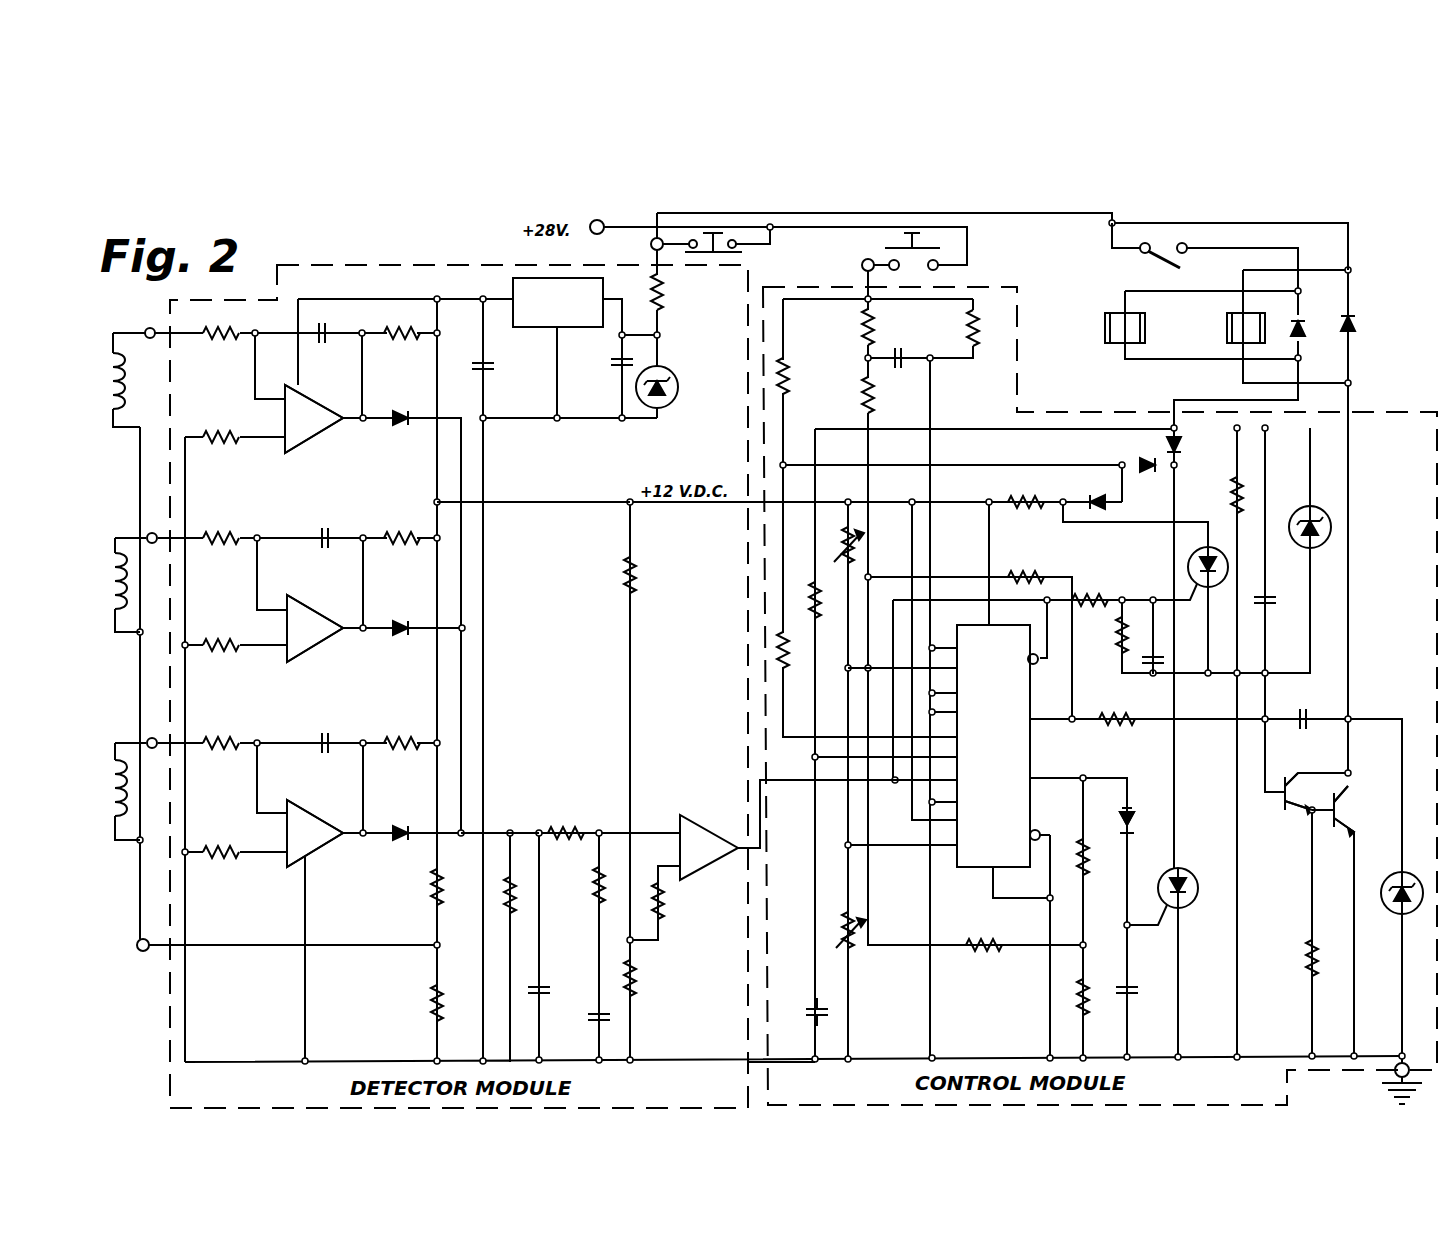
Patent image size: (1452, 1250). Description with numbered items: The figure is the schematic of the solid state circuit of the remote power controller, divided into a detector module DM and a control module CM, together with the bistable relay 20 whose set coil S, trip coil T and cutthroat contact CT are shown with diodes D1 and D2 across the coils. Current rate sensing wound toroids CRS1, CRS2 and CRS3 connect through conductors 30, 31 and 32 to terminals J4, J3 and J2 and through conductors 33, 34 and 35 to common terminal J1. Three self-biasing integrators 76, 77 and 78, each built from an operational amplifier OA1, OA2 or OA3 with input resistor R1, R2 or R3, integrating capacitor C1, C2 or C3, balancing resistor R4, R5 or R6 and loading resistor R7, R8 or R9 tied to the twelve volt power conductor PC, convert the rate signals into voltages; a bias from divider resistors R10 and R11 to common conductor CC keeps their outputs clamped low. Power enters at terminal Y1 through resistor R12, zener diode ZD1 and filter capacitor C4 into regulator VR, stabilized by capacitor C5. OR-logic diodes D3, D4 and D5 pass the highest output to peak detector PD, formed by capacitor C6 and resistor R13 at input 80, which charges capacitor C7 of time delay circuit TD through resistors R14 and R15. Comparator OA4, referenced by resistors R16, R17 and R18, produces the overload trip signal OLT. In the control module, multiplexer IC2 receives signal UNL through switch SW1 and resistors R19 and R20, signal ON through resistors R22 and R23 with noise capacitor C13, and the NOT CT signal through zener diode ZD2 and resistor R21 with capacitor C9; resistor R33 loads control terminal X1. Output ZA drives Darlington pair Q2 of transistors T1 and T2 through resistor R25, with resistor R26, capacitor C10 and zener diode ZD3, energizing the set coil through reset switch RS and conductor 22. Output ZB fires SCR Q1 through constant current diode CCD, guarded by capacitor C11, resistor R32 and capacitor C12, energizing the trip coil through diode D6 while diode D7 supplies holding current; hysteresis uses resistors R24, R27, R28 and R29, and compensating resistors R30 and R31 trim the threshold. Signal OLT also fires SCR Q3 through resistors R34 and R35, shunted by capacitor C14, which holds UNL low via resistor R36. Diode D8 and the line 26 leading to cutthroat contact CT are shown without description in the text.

The relay 20 is at (1185, 324).
The conductor 22 is at (1350, 240).
The control switch line 26 is at (1110, 245).
The conductor 30 is at (113, 333).
The conductor 31 is at (115, 538).
The conductor 32 is at (115, 743).
The conductor 33 is at (125, 426).
The conductor 34 is at (128, 630).
The conductor 35 is at (132, 837).
The self-biasing integrator 76 is at (318, 422).
The self-biasing integrator 77 is at (319, 632).
The self-biasing integrator 78 is at (319, 836).
The input terminal of peak detector 80 is at (508, 833).
The detector module DM is at (427, 265).
The control module CM is at (1017, 410).
The current rate sensing wound toroid CRS1 is at (112, 417).
The current rate sensing wound toroid CRS2 is at (112, 620).
The current rate sensing wound toroid CRS3 is at (112, 826).
The common terminal J1 is at (148, 951).
The overload signal input terminal J2 is at (152, 738).
The overload signal input terminal J3 is at (152, 533).
The overload signal input terminal J4 is at (150, 328).
The operational amplifier OA1 is at (313, 412).
The operational amplifier OA2 is at (314, 628).
The operational amplifier OA3 is at (311, 835).
The operational amplifier OA4 is at (705, 847).
The 12 volt regulator VR is at (540, 348).
The voltage limiting zener diode ZD1 is at (676, 372).
The zener diode ZD2 is at (1292, 510).
The zener diode ZD3 is at (1386, 880).
The terminal Y1 is at (650, 245).
The control device input terminal X1 is at (862, 265).
The reset switch RS is at (713, 252).
The control switch SW1 is at (884, 248).
The cutthroat contact CT is at (1147, 260).
The 12 volt D.C. power conductor PC is at (565, 504).
The trip time delay circuit TD is at (566, 797).
The peak detector circuit PD is at (518, 817).
The set control input signal ON is at (858, 672).
The control signal UNL is at (793, 733).
The overload trip signal OLT is at (760, 782).
The common conductor CC is at (760, 1060).
The dual 4-input digital multiplexer IC2 is at (1048, 755).
The silicon controlled rectifier Q1 is at (1186, 874).
The Darlington pair Q2 is at (1319, 790).
The silicon controlled rectifier Q3 is at (1188, 559).
The transistor T1 is at (1287, 816).
The transistor T2 is at (1350, 806).
The constant current diode CCD is at (1134, 813).
The diode D1 is at (1358, 322).
The diode D2 is at (1308, 334).
The OR-logic diode D3 is at (402, 410).
The OR-logic diode D4 is at (404, 620).
The OR-logic diode D5 is at (410, 827).
The diode D6 is at (1181, 446).
The diode D7 is at (1141, 461).
The diode D8 is at (1103, 506).
The input resistor R1 is at (229, 341).
The input resistor R2 is at (222, 532).
The input resistor R3 is at (222, 737).
The balancing resistor R4 is at (222, 432).
The balancing resistor R5 is at (226, 640).
The balancing resistor R6 is at (230, 845).
The loading resistor R7 is at (406, 340).
The loading resistor R8 is at (404, 532).
The loading resistor R9 is at (404, 737).
The voltage dividing resistor R10 is at (430, 887).
The voltage dividing resistor R11 is at (430, 1003).
The resistor R12 is at (666, 295).
The resistor R13 is at (504, 897).
The resistor R14 is at (584, 822).
The resistor R15 is at (594, 892).
The voltage divider resistor R16 is at (624, 575).
The voltage divider resistor R17 is at (638, 975).
The resistor R18 is at (664, 901).
The resistor R19 is at (790, 376).
The resistor R20 is at (775, 659).
The resistor R21 is at (802, 603).
The resistor R22 is at (858, 328).
The resistor R23 is at (860, 396).
The hysteresis feedback resistor R24 is at (1000, 942).
The resistor R25 is at (1128, 714).
The resistor R26 is at (1306, 954).
The hysteresis feedback resistor R27 is at (1028, 571).
The voltage divider resistor R28 is at (1088, 870).
The voltage divider resistor R29 is at (1078, 995).
The compensating resistor R30 is at (835, 535).
The compensating resistor R31 is at (864, 938).
The resistor R32 is at (1232, 494).
The resistor R33 is at (962, 330).
The voltage divider resistor R34 is at (1088, 592).
The voltage divider resistor R35 is at (1118, 636).
The resistor R36 is at (1026, 496).
The integrating capacitor C1 is at (332, 343).
The integrating capacitor C2 is at (330, 528).
The integrating capacitor C3 is at (330, 733).
The filter capacitor C4 is at (608, 363).
The stabilizing capacitor C5 is at (489, 364).
The capacitor C6 is at (558, 987).
The capacitor C7 is at (586, 1020).
The capacitor C9 is at (840, 1012).
The capacitor C10 is at (1300, 710).
The capacitor C11 is at (1142, 994).
The capacitor C12 is at (1276, 598).
The capacitor C13 is at (900, 371).
The capacitor C14 is at (1162, 650).